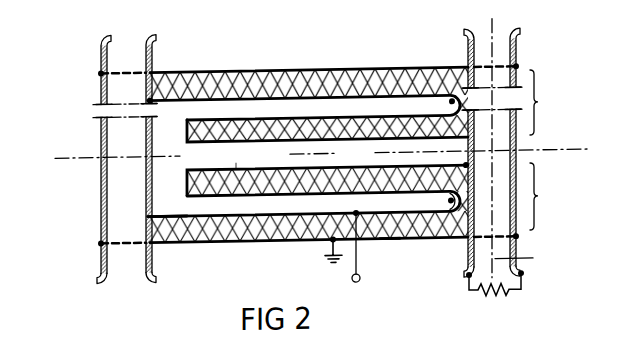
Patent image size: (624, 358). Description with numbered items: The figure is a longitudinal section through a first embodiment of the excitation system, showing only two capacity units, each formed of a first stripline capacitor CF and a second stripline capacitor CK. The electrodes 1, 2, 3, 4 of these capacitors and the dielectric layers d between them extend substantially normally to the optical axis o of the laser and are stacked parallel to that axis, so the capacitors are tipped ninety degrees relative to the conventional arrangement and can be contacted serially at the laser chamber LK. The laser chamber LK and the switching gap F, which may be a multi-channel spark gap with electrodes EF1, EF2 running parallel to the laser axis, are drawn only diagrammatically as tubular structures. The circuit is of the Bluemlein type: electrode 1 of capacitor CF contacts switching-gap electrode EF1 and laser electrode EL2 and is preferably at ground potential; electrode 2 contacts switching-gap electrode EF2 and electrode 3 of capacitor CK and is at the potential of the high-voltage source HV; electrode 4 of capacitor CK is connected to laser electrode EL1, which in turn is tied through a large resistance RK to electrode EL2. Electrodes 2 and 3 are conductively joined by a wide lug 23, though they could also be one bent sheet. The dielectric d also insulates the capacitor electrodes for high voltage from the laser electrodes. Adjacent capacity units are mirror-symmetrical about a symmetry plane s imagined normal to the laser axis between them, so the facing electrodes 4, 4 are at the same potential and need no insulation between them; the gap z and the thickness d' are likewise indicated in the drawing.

The electrode 1 is at (189, 245).
The electrode 2 is at (178, 210).
The electrode 3 is at (298, 194).
The electrode 4 is at (356, 151).
The wide lug 23 is at (449, 214).
The dielectric layer d is at (390, 252).
The dielectric thickness of coupling capacitor d' is at (228, 158).
The gap between capacitors z is at (194, 158).
The symmetry plate s is at (79, 154).
The switching gap F is at (124, 175).
The high-voltage source HV is at (363, 262).
The laser chamber LK is at (490, 139).
The switching gap electrode EF1 is at (101, 137).
The switching gap electrode EF2 is at (152, 147).
The laser chamber electrode EL1 is at (468, 51).
The laser chamber electrode EL2 is at (516, 54).
The first stripline capacitor CF is at (308, 214).
The second stripline capacitor CK is at (241, 169).
The resistance RK is at (495, 304).
The optical axis o is at (521, 258).